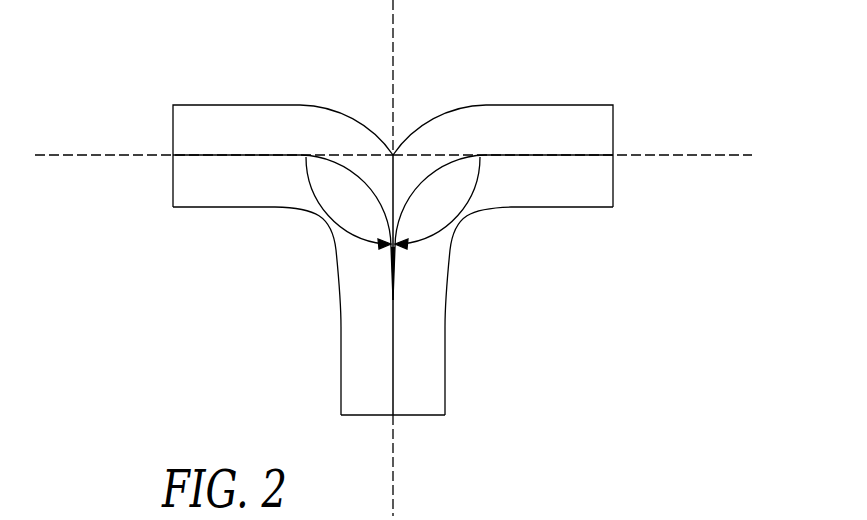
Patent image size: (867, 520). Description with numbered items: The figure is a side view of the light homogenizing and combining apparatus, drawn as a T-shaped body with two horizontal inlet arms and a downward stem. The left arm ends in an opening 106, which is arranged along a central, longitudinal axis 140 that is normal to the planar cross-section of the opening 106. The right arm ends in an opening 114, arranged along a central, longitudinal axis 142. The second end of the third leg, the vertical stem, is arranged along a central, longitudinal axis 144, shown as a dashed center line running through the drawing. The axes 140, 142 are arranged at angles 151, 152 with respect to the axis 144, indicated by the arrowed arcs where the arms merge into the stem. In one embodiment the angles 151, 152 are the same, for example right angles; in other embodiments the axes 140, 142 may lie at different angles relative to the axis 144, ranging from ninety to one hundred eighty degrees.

The opening 106 is at (173, 105).
The opening 114 is at (613, 105).
The central, longitudinal axis 140 is at (60, 153).
The central, longitudinal axis 142 is at (715, 152).
The central, longitudinal axis 144 is at (395, 12).
The angle 151 is at (331, 215).
The angle 152 is at (455, 215).